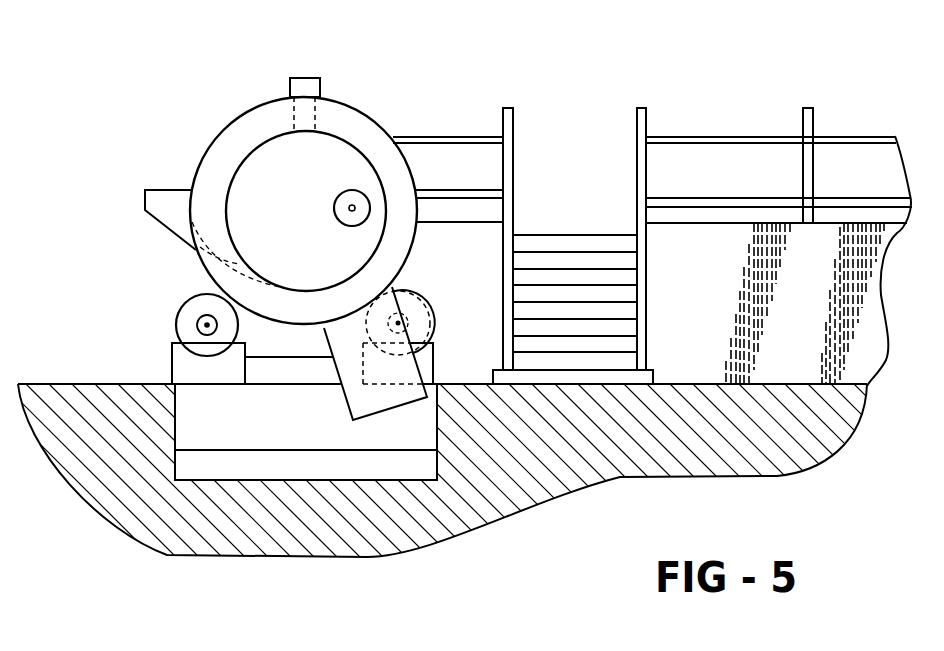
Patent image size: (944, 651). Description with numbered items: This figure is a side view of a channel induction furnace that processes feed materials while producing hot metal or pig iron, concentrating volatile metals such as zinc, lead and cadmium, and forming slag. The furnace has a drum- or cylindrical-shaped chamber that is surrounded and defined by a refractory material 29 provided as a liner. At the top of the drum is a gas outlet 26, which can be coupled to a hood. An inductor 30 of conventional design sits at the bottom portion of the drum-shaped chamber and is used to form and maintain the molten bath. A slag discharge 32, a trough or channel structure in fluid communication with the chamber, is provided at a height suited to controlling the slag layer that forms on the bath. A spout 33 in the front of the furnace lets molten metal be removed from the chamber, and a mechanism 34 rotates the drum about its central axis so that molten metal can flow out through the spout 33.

The gas outlet 26 is at (303, 78).
The refractory material 29 is at (262, 174).
The inductor 30 is at (338, 422).
The slag discharge 32 is at (334, 207).
The spout 33 is at (133, 200).
The mechanism 34 is at (177, 318).